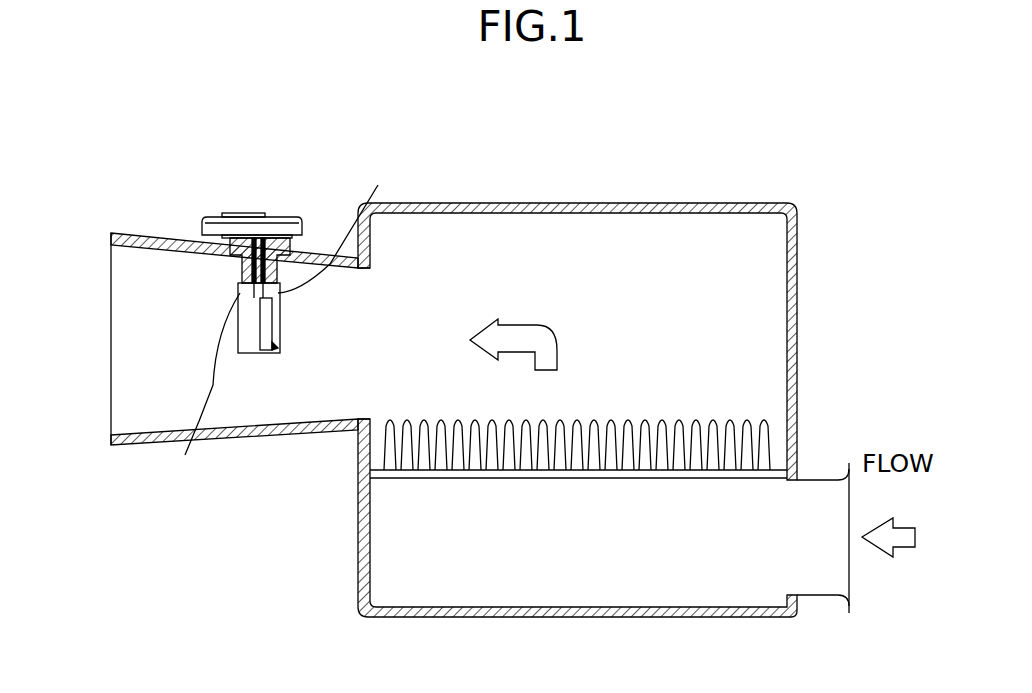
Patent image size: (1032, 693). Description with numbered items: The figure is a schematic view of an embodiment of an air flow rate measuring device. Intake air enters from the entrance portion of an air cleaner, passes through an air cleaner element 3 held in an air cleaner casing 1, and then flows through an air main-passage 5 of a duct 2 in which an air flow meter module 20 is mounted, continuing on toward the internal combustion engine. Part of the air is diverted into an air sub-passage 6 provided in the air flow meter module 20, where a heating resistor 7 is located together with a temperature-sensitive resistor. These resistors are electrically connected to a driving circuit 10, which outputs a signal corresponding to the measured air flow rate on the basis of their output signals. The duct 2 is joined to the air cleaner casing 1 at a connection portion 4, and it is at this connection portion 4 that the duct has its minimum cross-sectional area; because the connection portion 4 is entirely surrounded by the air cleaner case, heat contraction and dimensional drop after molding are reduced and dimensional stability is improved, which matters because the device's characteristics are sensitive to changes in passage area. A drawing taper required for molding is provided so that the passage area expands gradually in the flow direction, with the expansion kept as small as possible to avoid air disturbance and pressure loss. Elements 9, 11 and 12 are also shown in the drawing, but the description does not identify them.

The air cleaner casing 1 is at (582, 204).
The duct 2 is at (182, 240).
The air cleaner element 3 is at (763, 432).
The connection portion 4 is at (360, 270).
The air main-passage 5 is at (292, 347).
The air sub-passage 6 is at (282, 324).
The heating resistor 7 is at (283, 252).
The cap 9 is at (221, 236).
The driving circuit 10 is at (262, 213).
The lead terminal 11 is at (243, 287).
The lead terminal 12 is at (243, 256).
The air flow meter module 20 is at (285, 203).